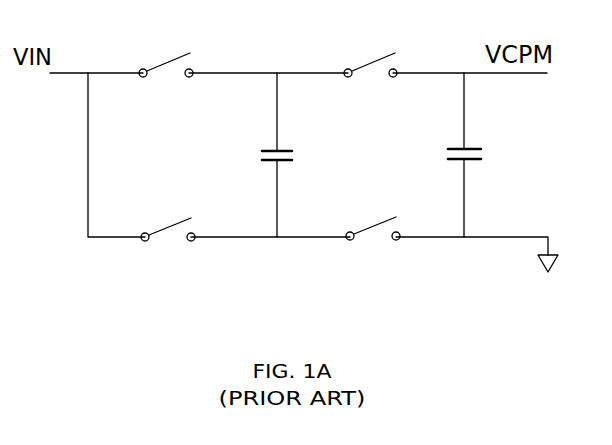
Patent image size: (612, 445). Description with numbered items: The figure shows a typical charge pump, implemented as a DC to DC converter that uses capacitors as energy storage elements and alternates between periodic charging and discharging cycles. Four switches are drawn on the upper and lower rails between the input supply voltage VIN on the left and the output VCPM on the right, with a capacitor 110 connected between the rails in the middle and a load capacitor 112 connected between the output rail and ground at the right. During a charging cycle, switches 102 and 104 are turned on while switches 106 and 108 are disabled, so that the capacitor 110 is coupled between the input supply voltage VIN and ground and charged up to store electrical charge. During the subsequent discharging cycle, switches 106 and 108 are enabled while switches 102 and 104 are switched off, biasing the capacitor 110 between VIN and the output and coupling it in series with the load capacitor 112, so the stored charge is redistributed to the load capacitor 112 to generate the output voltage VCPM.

The switch 102 is at (168, 46).
The switch 104 is at (380, 247).
The switch 106 is at (370, 44).
The switch 108 is at (172, 248).
The capacitor 110 is at (305, 162).
The load capacitor 112 is at (488, 158).